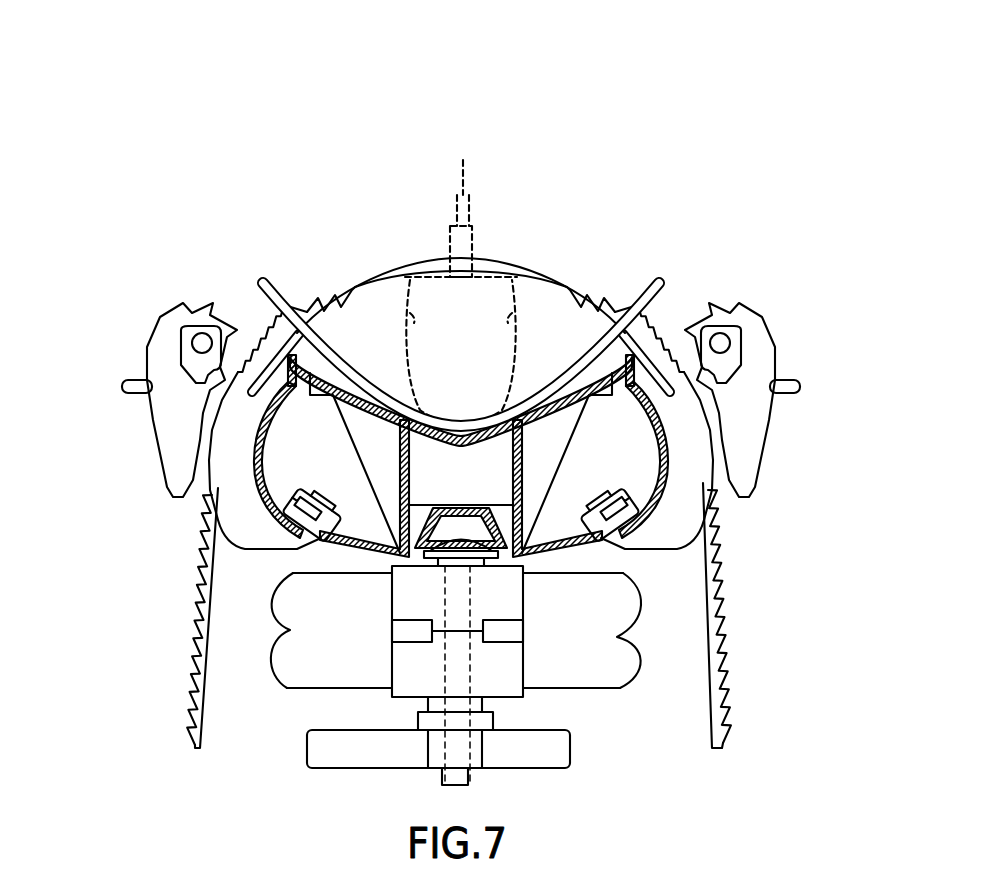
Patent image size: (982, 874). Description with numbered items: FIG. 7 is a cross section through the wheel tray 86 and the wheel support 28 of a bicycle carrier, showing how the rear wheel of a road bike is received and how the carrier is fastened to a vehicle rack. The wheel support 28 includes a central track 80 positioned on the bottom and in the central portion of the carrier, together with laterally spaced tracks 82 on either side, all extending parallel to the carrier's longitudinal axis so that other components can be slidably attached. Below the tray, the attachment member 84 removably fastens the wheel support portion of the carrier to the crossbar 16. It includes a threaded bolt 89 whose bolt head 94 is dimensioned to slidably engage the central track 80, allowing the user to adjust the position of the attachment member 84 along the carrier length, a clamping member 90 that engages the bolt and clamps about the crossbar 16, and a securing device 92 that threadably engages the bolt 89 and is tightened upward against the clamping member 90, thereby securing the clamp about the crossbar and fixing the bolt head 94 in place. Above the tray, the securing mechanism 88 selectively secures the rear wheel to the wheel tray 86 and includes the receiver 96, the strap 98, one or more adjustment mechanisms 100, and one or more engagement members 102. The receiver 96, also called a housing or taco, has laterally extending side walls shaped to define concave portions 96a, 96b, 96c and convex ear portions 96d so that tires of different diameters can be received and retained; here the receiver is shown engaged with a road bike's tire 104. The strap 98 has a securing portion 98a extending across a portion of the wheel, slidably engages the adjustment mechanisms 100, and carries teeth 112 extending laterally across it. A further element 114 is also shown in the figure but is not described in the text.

The crossbar 16 is at (577, 688).
The wheel support 28 is at (332, 138).
The central track 80 is at (493, 503).
The laterally spaced tracks 82 is at (310, 493).
The attachment member 84 is at (558, 780).
The wheel tray 86 is at (540, 424).
The securing mechanism 88 is at (722, 250).
The threaded bolt 89 is at (448, 784).
The clamping member 90 is at (392, 700).
The securing device 92 is at (307, 748).
The bolt head 94 is at (457, 540).
The receiver 96 is at (377, 397).
The concave portion 96a is at (383, 334).
The concave portion 96b is at (481, 393).
The concave portion 96c is at (580, 360).
The ear portions 96d is at (308, 252).
The strap 98 is at (203, 707).
The securing portion 98a is at (534, 230).
The adjustment mechanisms 100 is at (114, 358).
The engagement members 102 is at (330, 512).
The road bike's tire 104 is at (512, 350).
The teeth 112 is at (200, 547).
The pawl 114 is at (148, 345).